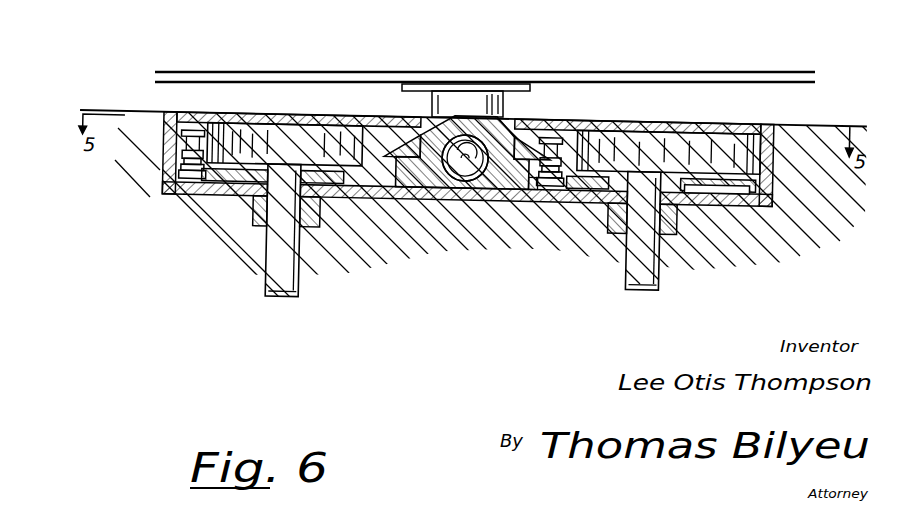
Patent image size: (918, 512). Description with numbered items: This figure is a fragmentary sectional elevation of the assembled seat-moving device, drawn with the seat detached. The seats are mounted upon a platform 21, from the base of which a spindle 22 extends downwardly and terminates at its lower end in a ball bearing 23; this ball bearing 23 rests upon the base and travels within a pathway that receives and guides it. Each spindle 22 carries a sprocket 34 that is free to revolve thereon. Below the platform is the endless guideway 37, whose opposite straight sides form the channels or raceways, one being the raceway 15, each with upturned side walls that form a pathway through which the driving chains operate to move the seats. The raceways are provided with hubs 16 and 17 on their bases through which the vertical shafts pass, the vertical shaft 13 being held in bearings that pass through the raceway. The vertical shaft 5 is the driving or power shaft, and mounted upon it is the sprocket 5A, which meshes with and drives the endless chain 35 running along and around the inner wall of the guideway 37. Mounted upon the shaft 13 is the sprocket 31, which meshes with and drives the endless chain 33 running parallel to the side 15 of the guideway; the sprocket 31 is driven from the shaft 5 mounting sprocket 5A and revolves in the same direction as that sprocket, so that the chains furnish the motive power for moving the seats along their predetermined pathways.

The vertical shaft 5 is at (643, 264).
The sprocket 5A is at (724, 186).
The vertical shaft 13 is at (278, 265).
The raceway 15 is at (350, 199).
The hub 16 is at (258, 268).
The hub 17 is at (611, 234).
The platform 21 is at (627, 74).
The spindle 22 is at (482, 96).
The ball bearing 23 is at (478, 199).
The sprocket 31 is at (212, 198).
The endless chain 33 is at (168, 180).
The sprocket 34 is at (524, 202).
The endless chain 35 is at (563, 138).
The endless guideway 37 is at (505, 123).